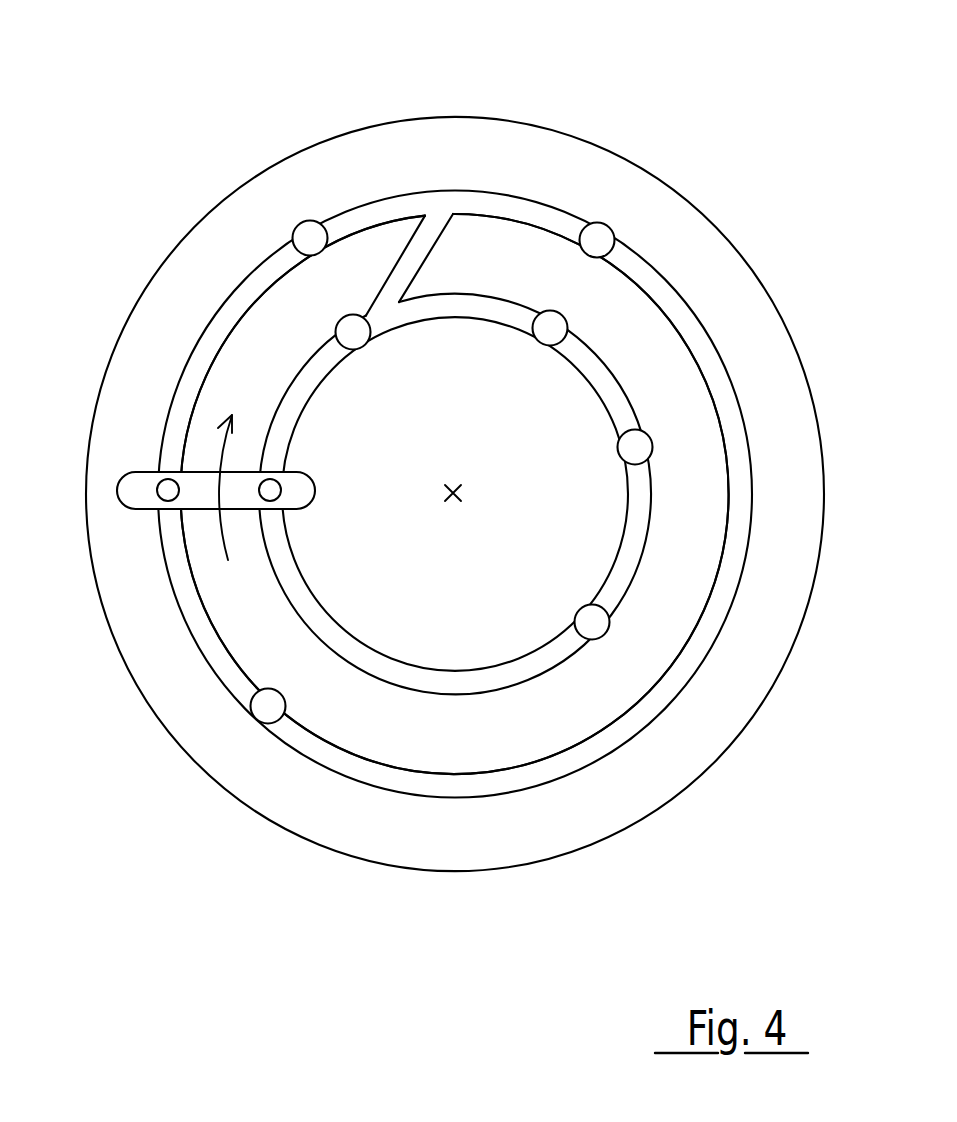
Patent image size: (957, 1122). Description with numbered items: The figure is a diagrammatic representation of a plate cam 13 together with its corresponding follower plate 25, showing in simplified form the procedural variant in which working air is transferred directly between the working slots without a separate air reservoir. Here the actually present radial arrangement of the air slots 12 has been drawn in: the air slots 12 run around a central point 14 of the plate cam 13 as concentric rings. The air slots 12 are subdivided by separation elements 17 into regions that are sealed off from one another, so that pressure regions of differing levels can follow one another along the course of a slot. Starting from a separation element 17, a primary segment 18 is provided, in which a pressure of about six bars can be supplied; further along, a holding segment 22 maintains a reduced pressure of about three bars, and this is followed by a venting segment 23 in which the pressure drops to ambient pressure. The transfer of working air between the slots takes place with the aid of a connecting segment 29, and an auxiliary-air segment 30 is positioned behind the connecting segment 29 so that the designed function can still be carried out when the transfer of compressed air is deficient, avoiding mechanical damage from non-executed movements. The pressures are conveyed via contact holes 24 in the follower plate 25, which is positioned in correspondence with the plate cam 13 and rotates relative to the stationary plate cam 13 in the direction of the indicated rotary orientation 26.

The air slots 12 is at (798, 218).
The plate cam 13 is at (867, 322).
The central point 14 is at (433, 585).
The separation elements 17 is at (307, 243).
The primary segment 18 is at (235, 318).
The holding segment 22 is at (488, 207).
The venting segment 23 is at (348, 448).
The contact holes 24 is at (168, 492).
The follower plate 25 is at (73, 633).
The rotary orientation 26 is at (104, 700).
The connecting segment 29 is at (398, 270).
The auxiliary-air segment 30 is at (828, 263).